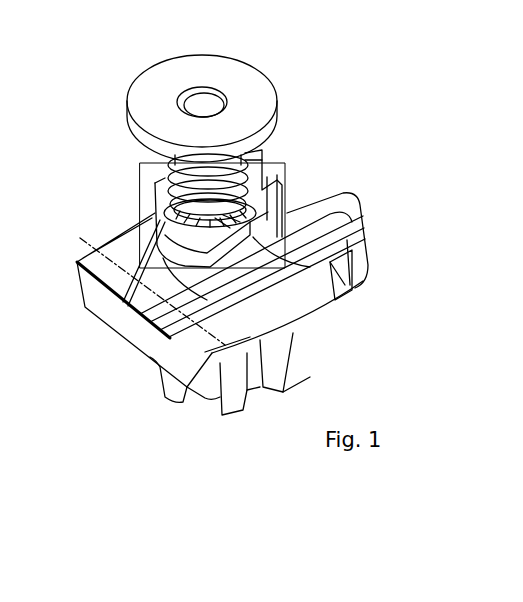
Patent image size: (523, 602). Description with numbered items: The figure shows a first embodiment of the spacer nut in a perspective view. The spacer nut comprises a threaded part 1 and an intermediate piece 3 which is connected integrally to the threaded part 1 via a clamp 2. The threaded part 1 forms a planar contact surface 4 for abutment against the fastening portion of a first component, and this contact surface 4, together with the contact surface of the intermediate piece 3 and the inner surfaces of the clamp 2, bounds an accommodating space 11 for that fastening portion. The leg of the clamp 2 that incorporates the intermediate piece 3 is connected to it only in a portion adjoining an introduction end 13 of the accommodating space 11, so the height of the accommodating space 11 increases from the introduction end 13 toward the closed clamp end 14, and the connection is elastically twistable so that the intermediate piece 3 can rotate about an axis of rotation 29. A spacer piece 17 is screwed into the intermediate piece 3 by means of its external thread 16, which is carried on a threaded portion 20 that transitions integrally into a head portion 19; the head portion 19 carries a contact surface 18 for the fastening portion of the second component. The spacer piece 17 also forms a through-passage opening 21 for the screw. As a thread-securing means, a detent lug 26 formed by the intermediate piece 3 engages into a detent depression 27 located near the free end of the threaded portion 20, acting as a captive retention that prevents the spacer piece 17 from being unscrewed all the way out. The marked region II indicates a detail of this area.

The threaded part 1 is at (278, 366).
The clamp 2 is at (356, 245).
The intermediate piece 3 is at (262, 230).
The contact surface 4 is at (310, 288).
The accommodating space 11 is at (267, 310).
The introduction end 13 is at (132, 320).
The closed clamp end 14 is at (372, 253).
The external thread 16 is at (172, 177).
The spacer piece 17 is at (256, 78).
The contact surface 18 is at (167, 87).
The head portion 19 is at (127, 120).
The threaded portion 20 is at (252, 155).
The through-passage opening 21 is at (201, 107).
The detent lug 26 is at (228, 218).
The detent depression 27 is at (218, 193).
The axis of rotation 29 is at (80, 235).
The detail section II is at (270, 190).